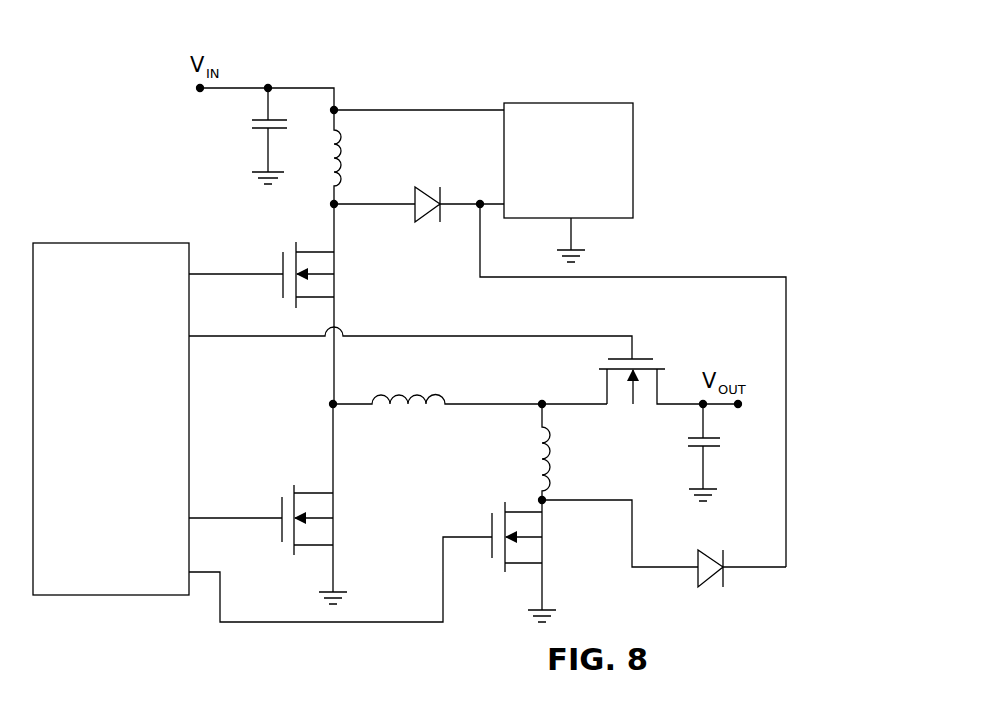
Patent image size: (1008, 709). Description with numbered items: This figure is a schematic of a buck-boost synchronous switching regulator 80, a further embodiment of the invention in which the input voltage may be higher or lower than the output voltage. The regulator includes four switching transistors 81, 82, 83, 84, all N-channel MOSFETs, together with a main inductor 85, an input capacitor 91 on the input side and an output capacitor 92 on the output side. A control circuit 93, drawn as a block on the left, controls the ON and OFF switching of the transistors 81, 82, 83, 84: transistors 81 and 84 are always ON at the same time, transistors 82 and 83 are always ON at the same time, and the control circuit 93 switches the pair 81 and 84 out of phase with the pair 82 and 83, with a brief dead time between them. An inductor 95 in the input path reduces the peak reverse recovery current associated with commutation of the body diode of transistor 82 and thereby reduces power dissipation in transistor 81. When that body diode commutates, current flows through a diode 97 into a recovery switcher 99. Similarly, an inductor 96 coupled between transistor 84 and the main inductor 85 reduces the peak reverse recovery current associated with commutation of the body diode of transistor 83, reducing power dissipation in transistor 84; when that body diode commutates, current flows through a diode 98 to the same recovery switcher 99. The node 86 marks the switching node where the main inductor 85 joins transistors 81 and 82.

The buck-boost synchronous switching regulator 80 is at (604, 74).
The switching transistor 81 is at (336, 270).
The switching transistor 82 is at (334, 536).
The switching transistor 83 is at (648, 358).
The switching transistor 84 is at (543, 550).
The main inductor 85 is at (383, 388).
The switching node 86 is at (330, 404).
The input capacitor 91 is at (278, 121).
The output capacitor 92 is at (693, 449).
The control circuit 93 is at (97, 243).
The inductor 95 is at (342, 155).
The inductor 96 is at (549, 460).
The diode 97 is at (416, 221).
The diode 98 is at (698, 550).
The recovery switcher 99 is at (633, 167).